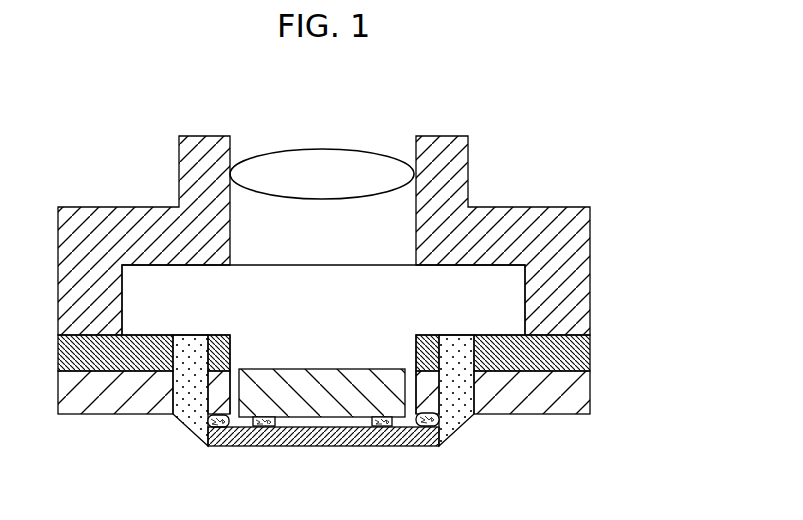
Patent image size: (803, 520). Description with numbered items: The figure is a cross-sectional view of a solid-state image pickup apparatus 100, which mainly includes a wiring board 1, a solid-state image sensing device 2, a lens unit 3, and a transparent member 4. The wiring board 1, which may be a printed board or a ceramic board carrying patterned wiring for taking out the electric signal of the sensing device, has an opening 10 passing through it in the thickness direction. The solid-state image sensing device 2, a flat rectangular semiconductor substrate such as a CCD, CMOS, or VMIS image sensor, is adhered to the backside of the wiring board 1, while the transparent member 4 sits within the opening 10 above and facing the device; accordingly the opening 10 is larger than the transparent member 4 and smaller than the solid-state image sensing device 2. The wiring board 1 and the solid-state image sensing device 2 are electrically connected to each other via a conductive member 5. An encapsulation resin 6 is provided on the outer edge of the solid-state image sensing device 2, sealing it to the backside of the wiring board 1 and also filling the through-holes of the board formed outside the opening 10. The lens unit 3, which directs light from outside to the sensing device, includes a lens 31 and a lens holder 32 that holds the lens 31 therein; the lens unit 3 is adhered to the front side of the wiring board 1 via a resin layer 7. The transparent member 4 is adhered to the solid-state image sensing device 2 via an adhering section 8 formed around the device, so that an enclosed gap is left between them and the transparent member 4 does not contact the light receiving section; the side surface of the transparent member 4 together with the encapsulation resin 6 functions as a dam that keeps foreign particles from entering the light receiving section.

The solid-state image pickup apparatus 100 is at (632, 143).
The lens unit 3 is at (537, 92).
The lens 31 is at (372, 163).
The lens holder 32 is at (458, 161).
The resin layer 7 is at (589, 349).
The wiring board 1 is at (580, 395).
The opening 10 is at (257, 352).
The conductive member 5 is at (220, 447).
The encapsulation resin 6 is at (450, 423).
The solid-state image sensing device 2 is at (375, 447).
The transparent member 4 is at (326, 383).
The adhering section 8 is at (265, 447).